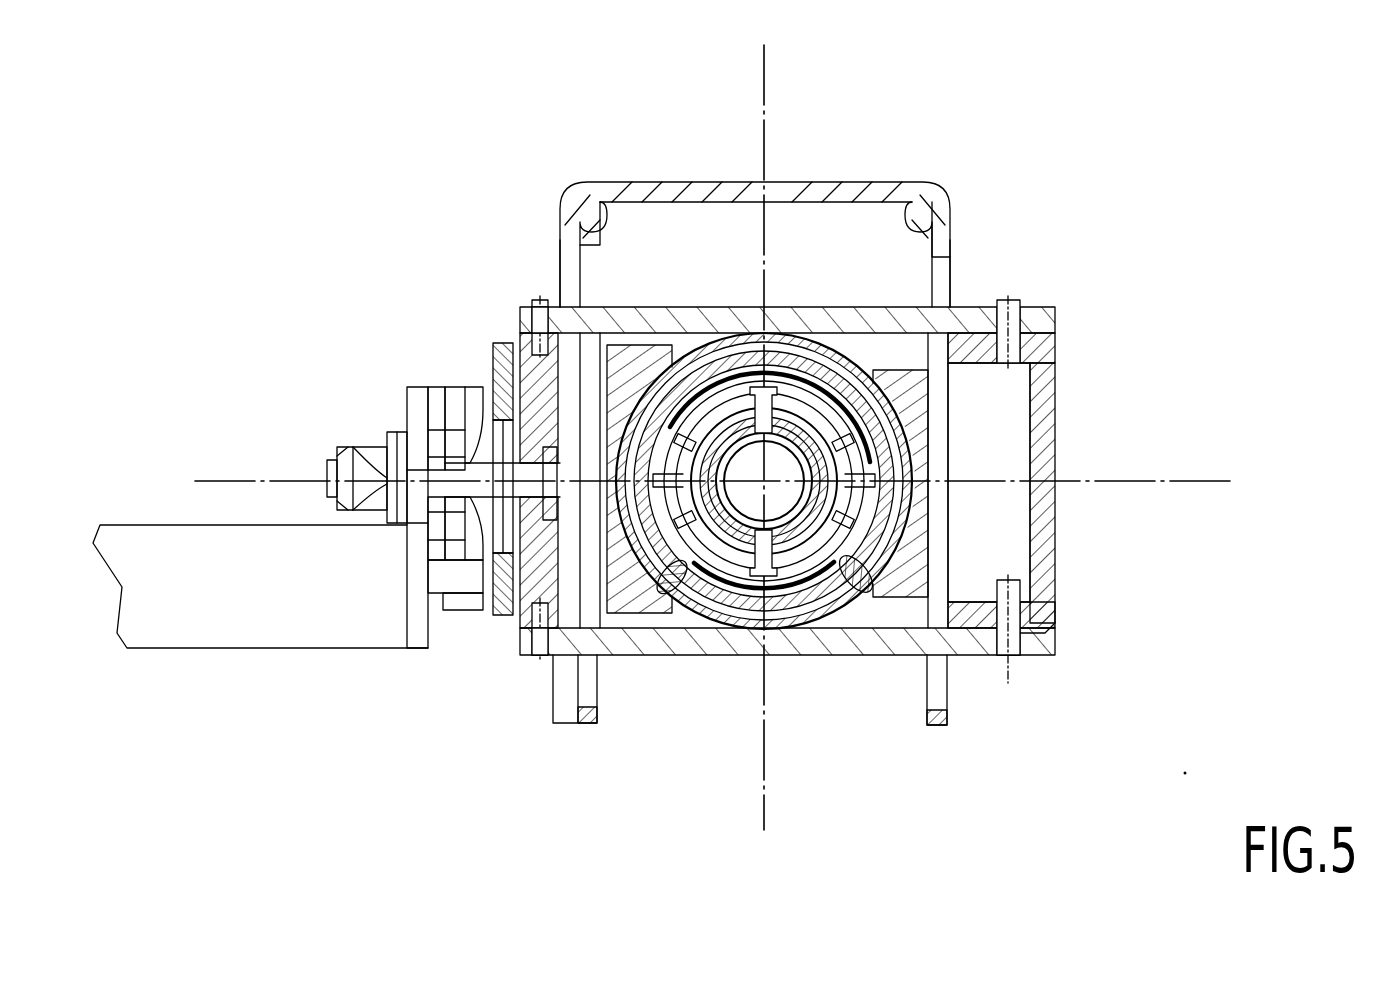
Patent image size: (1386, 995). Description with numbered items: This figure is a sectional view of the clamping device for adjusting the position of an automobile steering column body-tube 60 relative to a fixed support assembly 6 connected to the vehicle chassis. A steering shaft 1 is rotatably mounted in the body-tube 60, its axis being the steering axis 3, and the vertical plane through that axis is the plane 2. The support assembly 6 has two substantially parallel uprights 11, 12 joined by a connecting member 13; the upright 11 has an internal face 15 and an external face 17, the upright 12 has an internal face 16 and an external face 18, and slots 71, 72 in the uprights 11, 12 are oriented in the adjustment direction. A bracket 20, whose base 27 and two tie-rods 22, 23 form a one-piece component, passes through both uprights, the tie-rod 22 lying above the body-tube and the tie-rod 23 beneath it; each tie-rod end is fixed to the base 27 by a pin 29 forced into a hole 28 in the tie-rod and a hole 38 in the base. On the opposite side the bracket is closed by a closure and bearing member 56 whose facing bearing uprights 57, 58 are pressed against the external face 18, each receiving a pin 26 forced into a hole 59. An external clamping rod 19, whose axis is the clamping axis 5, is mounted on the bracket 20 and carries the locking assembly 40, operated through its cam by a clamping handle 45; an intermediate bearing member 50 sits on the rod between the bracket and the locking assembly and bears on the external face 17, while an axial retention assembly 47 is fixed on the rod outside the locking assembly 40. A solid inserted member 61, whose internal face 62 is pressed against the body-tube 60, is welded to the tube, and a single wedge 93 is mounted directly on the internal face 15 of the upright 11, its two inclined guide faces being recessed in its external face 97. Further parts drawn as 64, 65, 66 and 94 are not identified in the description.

The steering shaft 1 is at (736, 322).
The vertical plane 2 is at (752, 80).
The steering axis 3 is at (742, 612).
The clamping axis 5 is at (1177, 481).
The support assembly 6 is at (821, 182).
The upright 11 is at (585, 727).
The upright 12 is at (938, 728).
The connecting member 13 is at (697, 195).
The internal face 15 is at (582, 235).
The internal face 16 is at (913, 182).
The external face 17 is at (562, 230).
The external face 18 is at (952, 233).
The external clamping rod 19 is at (527, 485).
The bracket 20 is at (527, 302).
The tie-rod 22 is at (840, 395).
The tie-rod 23 is at (780, 690).
The pin 26 is at (1012, 350).
The base 27 is at (533, 573).
The hole 28 is at (536, 303).
The pin 29 is at (540, 330).
The hole 38 is at (503, 345).
The locking assembly 40 is at (416, 395).
The clamping handle 45 is at (183, 612).
The axial retention assembly 47 is at (330, 465).
The intermediate bearing member 50 is at (538, 372).
The closure and bearing member 56 is at (1046, 425).
The bearing upright 57 is at (975, 345).
The bearing upright 58 is at (962, 622).
The hole 59 is at (1042, 348).
The body-tube 60 is at (802, 378).
The solid inserted member 61 is at (905, 612).
The internal face 62 is at (822, 612).
The right bearing block 64 is at (904, 400).
The rotor lug 65 is at (862, 600).
The cavity 66 is at (952, 505).
The slot 71 is at (590, 682).
The slot 72 is at (947, 688).
The wedge 93 is at (642, 630).
The lower housing plate 94 is at (683, 630).
The external face 97 is at (604, 380).